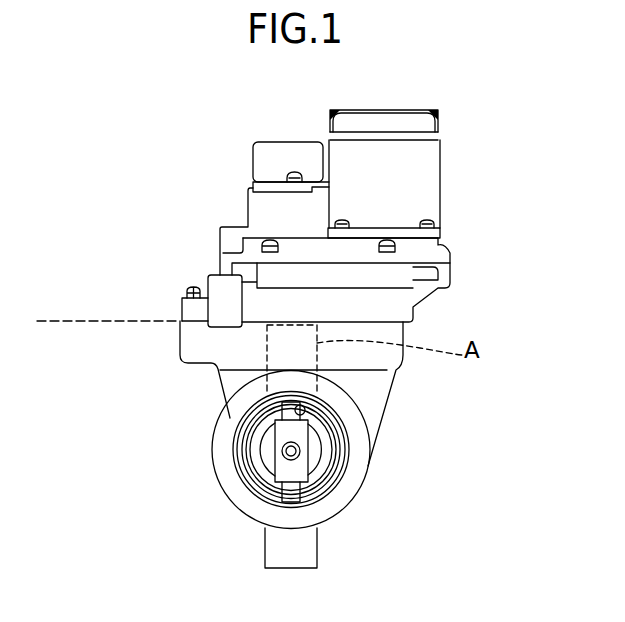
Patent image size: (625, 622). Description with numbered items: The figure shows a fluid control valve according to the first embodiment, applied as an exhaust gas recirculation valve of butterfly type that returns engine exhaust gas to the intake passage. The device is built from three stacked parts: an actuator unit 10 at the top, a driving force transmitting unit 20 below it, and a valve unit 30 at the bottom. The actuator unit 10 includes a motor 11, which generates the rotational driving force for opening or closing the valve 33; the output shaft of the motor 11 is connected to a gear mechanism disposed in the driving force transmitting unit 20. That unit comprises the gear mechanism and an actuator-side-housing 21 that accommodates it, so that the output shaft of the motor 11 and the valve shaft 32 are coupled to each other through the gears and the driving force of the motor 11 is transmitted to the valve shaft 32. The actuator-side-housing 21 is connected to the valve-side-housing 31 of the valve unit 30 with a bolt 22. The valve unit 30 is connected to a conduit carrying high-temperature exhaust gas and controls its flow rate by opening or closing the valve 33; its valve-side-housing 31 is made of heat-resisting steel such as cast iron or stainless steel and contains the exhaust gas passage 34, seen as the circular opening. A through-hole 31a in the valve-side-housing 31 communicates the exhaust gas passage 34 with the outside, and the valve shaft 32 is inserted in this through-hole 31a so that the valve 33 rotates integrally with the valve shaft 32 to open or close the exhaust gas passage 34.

The actuator unit 10 is at (450, 110).
The motor 11 is at (400, 158).
The driving force transmitting unit 20 is at (120, 110).
The actuator-side-housing 21 is at (217, 290).
The bolt 22 is at (186, 292).
The valve unit 30 is at (120, 322).
The valve-side-housing 31 is at (222, 385).
The through-hole 31a is at (304, 411).
The valve shaft 32 is at (295, 495).
The valve 33 is at (318, 438).
The exhaust gas passage 34 is at (235, 462).